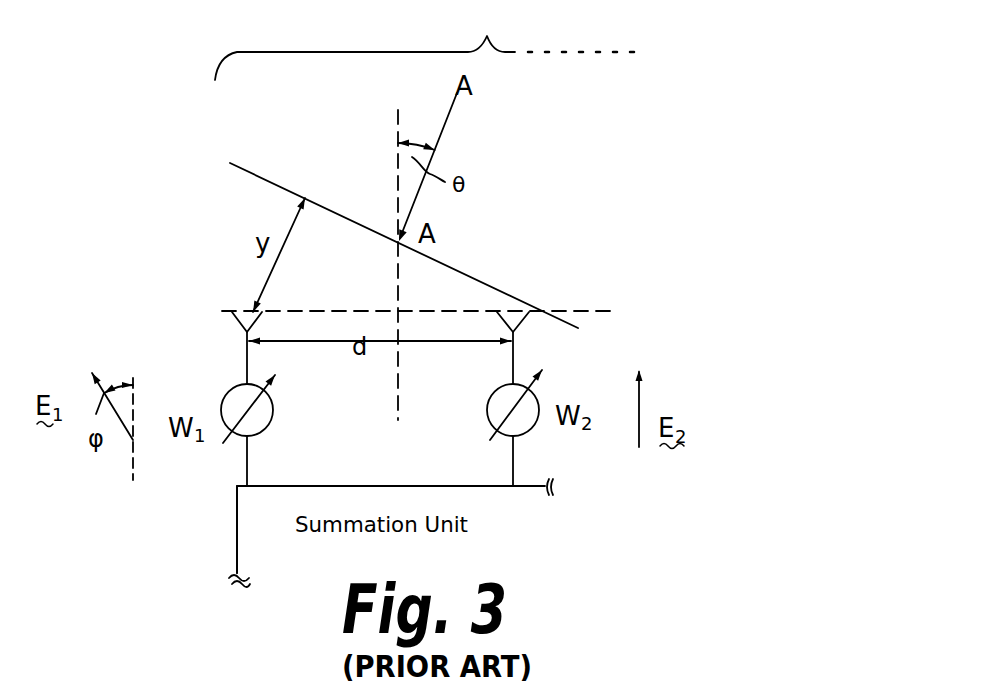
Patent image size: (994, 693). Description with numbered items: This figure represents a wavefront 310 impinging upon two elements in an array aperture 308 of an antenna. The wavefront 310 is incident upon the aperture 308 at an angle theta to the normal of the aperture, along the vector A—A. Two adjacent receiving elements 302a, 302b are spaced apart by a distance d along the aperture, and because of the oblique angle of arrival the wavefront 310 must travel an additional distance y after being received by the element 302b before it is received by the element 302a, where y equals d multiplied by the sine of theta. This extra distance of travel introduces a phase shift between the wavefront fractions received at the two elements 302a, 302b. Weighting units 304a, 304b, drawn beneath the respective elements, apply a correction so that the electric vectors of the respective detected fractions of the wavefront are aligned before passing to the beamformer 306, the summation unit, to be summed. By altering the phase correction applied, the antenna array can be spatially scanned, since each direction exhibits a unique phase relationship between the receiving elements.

The receiving element 302a is at (244, 325).
The receiving element 302b is at (520, 313).
The weighting unit 304a is at (233, 399).
The weighting unit 304b is at (532, 415).
The beamformer 306 is at (237, 539).
The array aperture 308 is at (427, 44).
The wavefront 310 is at (520, 310).